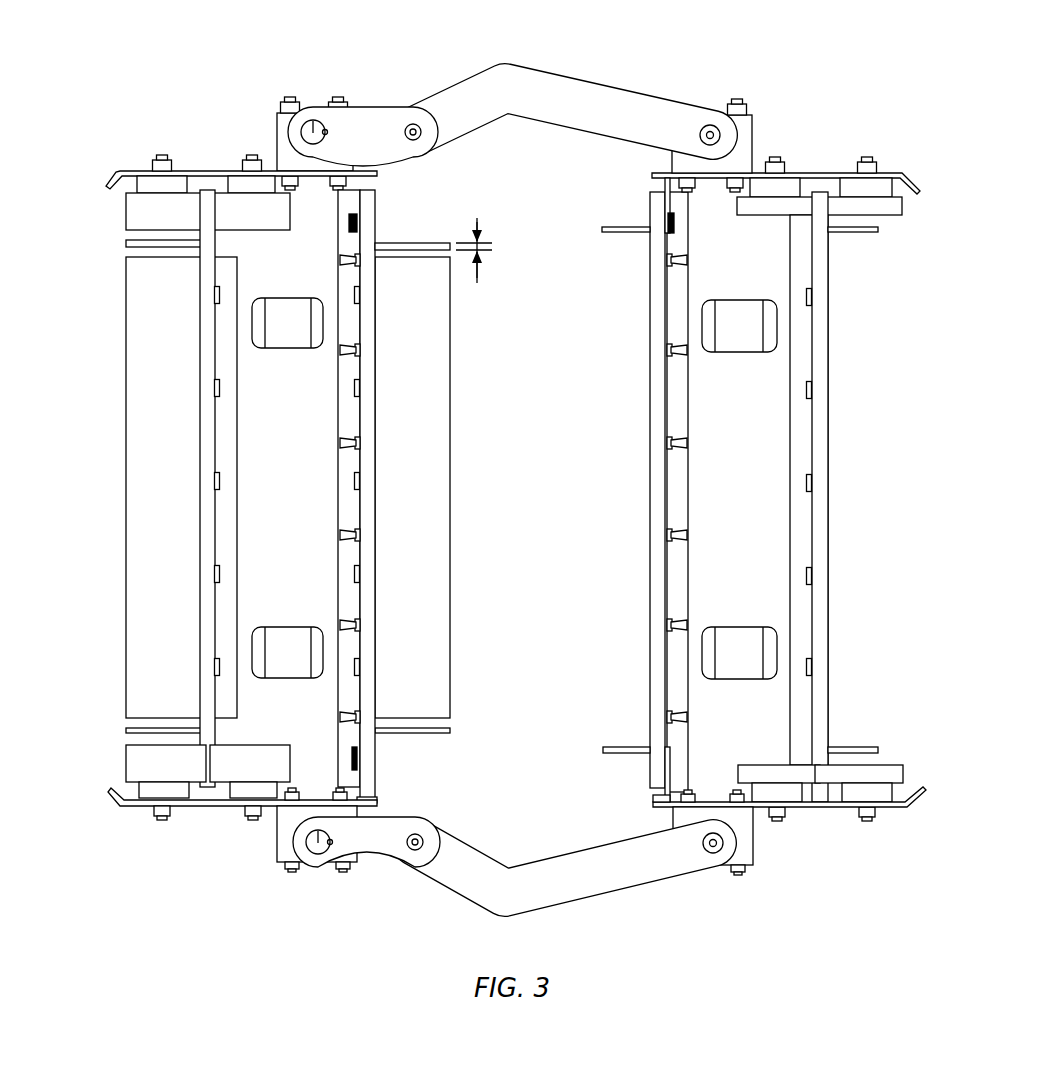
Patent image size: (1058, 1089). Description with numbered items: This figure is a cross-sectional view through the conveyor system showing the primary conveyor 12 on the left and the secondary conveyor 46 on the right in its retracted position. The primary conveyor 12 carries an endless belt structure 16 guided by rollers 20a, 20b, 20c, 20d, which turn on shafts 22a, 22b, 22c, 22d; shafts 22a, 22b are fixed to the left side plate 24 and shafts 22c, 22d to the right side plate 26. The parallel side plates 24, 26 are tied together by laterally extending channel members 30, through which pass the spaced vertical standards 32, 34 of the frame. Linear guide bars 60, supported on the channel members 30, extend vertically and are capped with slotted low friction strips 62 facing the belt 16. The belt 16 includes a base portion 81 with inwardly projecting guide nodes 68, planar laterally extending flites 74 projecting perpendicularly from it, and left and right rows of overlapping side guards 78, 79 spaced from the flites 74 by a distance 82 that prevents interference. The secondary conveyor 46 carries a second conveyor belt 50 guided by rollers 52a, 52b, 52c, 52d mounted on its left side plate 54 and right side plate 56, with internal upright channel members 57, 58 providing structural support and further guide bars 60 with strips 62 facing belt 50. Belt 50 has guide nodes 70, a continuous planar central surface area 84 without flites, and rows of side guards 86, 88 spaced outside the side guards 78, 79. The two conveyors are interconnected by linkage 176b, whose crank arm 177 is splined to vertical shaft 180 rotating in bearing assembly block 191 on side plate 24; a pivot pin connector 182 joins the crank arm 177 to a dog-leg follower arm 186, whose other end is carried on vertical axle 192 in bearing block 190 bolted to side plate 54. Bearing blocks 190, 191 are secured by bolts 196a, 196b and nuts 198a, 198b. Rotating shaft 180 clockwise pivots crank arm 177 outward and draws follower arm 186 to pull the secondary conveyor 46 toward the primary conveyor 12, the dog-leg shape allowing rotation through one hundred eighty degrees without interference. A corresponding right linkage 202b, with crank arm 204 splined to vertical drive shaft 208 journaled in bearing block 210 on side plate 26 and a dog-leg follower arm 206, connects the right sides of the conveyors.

The primary conveyor 12 is at (386, 474).
The endless belt structure 16 is at (514, 489).
The roller 20a is at (275, 745).
The roller 20b is at (126, 764).
The roller 20c is at (280, 232).
The roller 20d is at (126, 208).
The shaft 22a is at (253, 818).
The shaft 22b is at (162, 818).
The shaft 22c is at (252, 157).
The shaft 22d is at (162, 157).
The left side plate 24 is at (211, 807).
The right side plate 26 is at (215, 171).
The channel member 30 is at (276, 494).
The vertical standard 32 is at (276, 666).
The vertical standard 34 is at (276, 337).
The secondary conveyor 46 is at (736, 472).
The second conveyor belt 50 is at (836, 514).
The guide roller 52a is at (745, 765).
The guide roller 52b is at (895, 765).
The guide roller 52c is at (750, 217).
The guide roller 52d is at (895, 217).
The left side plate 54 is at (840, 808).
The right side plate 56 is at (815, 172).
The upright channel member 57 is at (728, 667).
The upright channel member 58 is at (728, 340).
The linear guide bar 60 is at (340, 363).
The low friction strip 62 is at (357, 346).
The guide node 68 is at (221, 570).
The guide node 70 is at (807, 486).
The flite 74 is at (450, 356).
The side guard 78 is at (450, 739).
The side guard 79 is at (441, 242).
The base portion 81 is at (377, 211).
The distance 82 is at (500, 251).
The central surface area 84 is at (650, 351).
The side guard row 86 is at (603, 750).
The side guard row 88 is at (625, 233).
The linkage 176b is at (511, 865).
The crank arm 177 is at (375, 855).
The vertical shaft 180 is at (318, 846).
The pivot pin connector 182 is at (415, 846).
The follower arm 186 is at (625, 895).
The bearing block 190 is at (755, 835).
The bearing assembly block 191 is at (283, 853).
The vertical axle 192 is at (713, 847).
The bolt 196a is at (688, 790).
The bolt 196b is at (294, 792).
The nut 198a is at (655, 800).
The nut 198b is at (345, 799).
The right linkage 202b is at (508, 101).
The crank arm 204 is at (402, 110).
The dog-leg follower arm 206 is at (553, 67).
The vertical drive shaft 208 is at (312, 124).
The bearing block 210 is at (280, 120).